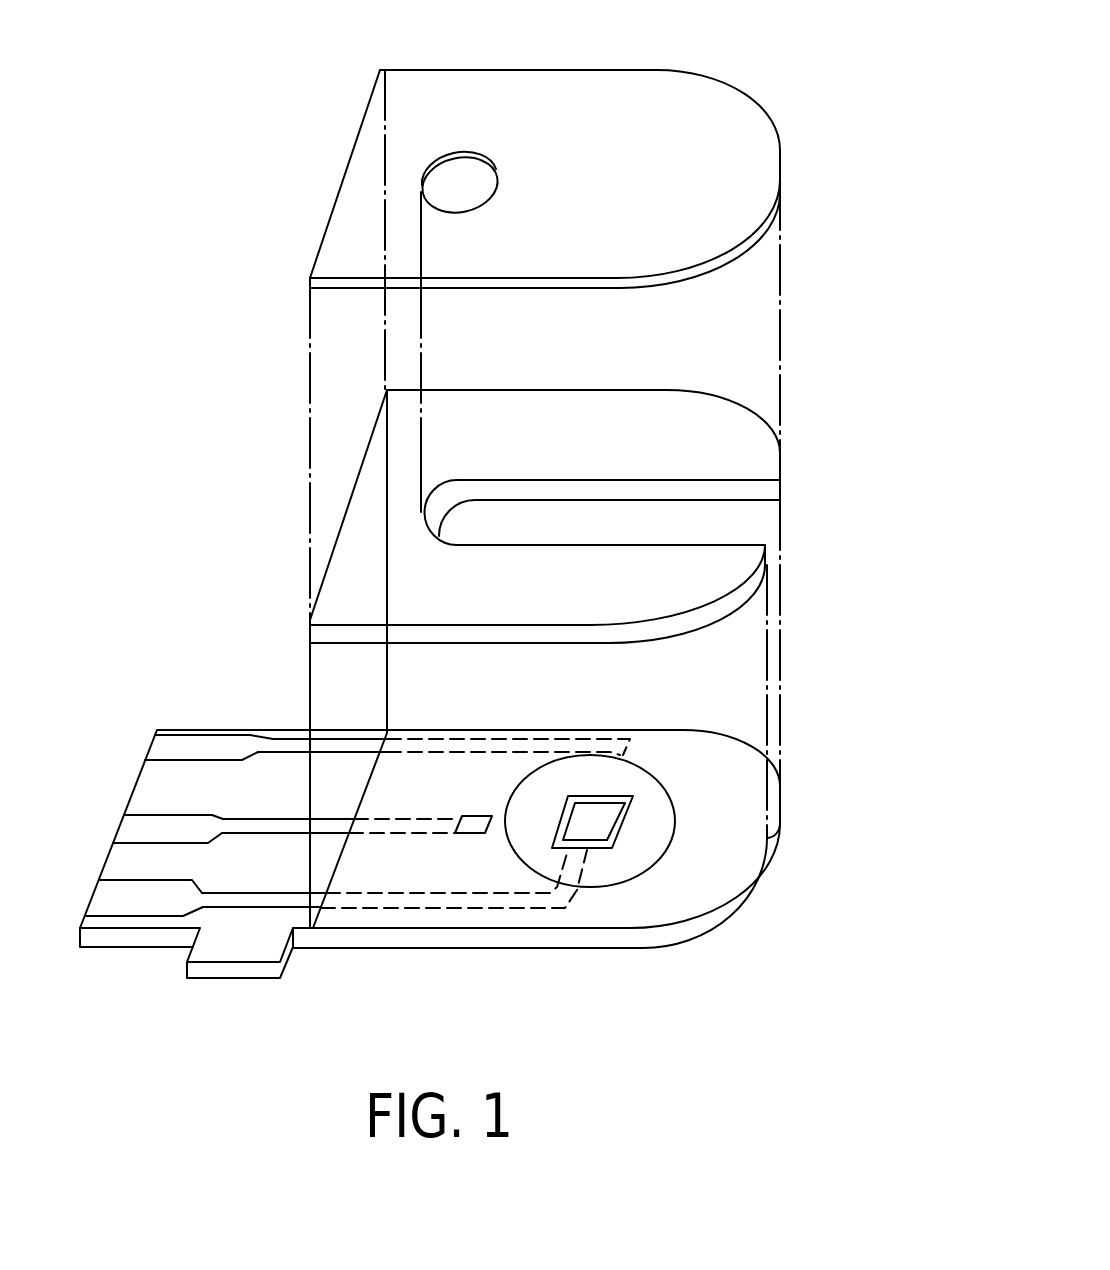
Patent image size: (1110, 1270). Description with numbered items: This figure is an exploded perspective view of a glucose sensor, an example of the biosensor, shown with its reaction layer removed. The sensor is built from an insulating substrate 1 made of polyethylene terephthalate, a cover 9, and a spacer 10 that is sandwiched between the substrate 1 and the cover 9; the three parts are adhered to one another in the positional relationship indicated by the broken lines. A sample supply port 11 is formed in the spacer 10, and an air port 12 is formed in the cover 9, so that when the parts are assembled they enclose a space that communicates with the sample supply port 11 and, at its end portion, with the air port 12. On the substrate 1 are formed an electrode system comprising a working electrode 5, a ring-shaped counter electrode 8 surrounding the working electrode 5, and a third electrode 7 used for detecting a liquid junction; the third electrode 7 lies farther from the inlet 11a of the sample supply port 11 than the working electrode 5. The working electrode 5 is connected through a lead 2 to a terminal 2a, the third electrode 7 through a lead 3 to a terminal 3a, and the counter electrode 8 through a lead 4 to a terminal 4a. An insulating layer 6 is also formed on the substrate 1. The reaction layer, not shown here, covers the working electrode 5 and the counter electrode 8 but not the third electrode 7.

The insulating substrate 1 is at (122, 857).
The lead 2 is at (283, 900).
The terminal 2a is at (115, 898).
The lead 3 is at (253, 830).
The terminal 3a is at (135, 830).
The lead 4 is at (277, 748).
The terminal 4a is at (163, 748).
The working electrode 5 is at (598, 822).
The insulating layer 6 is at (485, 868).
The third electrode 7 is at (463, 830).
The counter electrode 8 is at (648, 782).
The cover 9 is at (728, 120).
The spacer 10 is at (367, 508).
The sample supply port 11 is at (745, 525).
The inlet 11a is at (794, 839).
The air port 12 is at (458, 178).